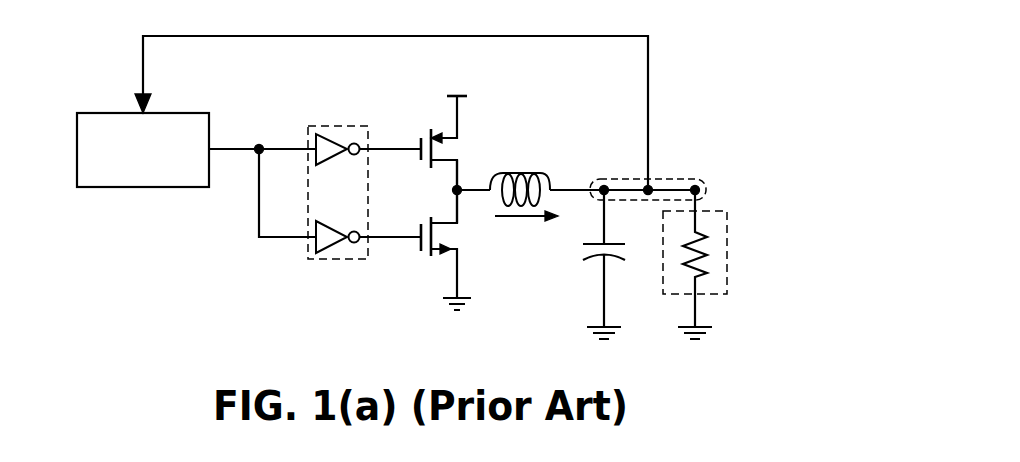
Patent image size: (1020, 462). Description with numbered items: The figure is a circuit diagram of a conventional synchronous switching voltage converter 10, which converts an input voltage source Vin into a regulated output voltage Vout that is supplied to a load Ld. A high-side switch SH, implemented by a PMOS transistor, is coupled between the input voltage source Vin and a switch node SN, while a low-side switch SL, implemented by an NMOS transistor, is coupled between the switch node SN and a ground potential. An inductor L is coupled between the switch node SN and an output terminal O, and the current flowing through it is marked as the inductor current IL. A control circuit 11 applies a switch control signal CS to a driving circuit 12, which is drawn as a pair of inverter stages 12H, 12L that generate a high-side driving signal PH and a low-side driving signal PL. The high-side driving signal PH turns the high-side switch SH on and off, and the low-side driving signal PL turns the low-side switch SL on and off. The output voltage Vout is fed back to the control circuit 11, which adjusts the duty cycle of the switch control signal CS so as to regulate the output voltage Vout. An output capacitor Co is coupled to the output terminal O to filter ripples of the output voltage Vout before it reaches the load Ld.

The synchronous switching voltage converter 10 is at (700, 60).
The control circuit 11 is at (122, 188).
The driving circuit 12 is at (338, 172).
The high-side driver inverter 12H is at (338, 158).
The low-side driver inverter 12L is at (338, 228).
The switch control signal CS is at (247, 146).
The high-side driving signal PH is at (405, 146).
The low-side driving signal PL is at (402, 241).
The high-side switch SH is at (460, 131).
The low-side switch SL is at (447, 238).
The switch node SN is at (452, 191).
The input voltage source Vin is at (452, 84).
The inductor L is at (520, 178).
The inductor current IL is at (526, 231).
The output terminal O is at (691, 182).
The output voltage Vout is at (697, 175).
The output capacitor Co is at (590, 263).
The load Ld is at (727, 242).